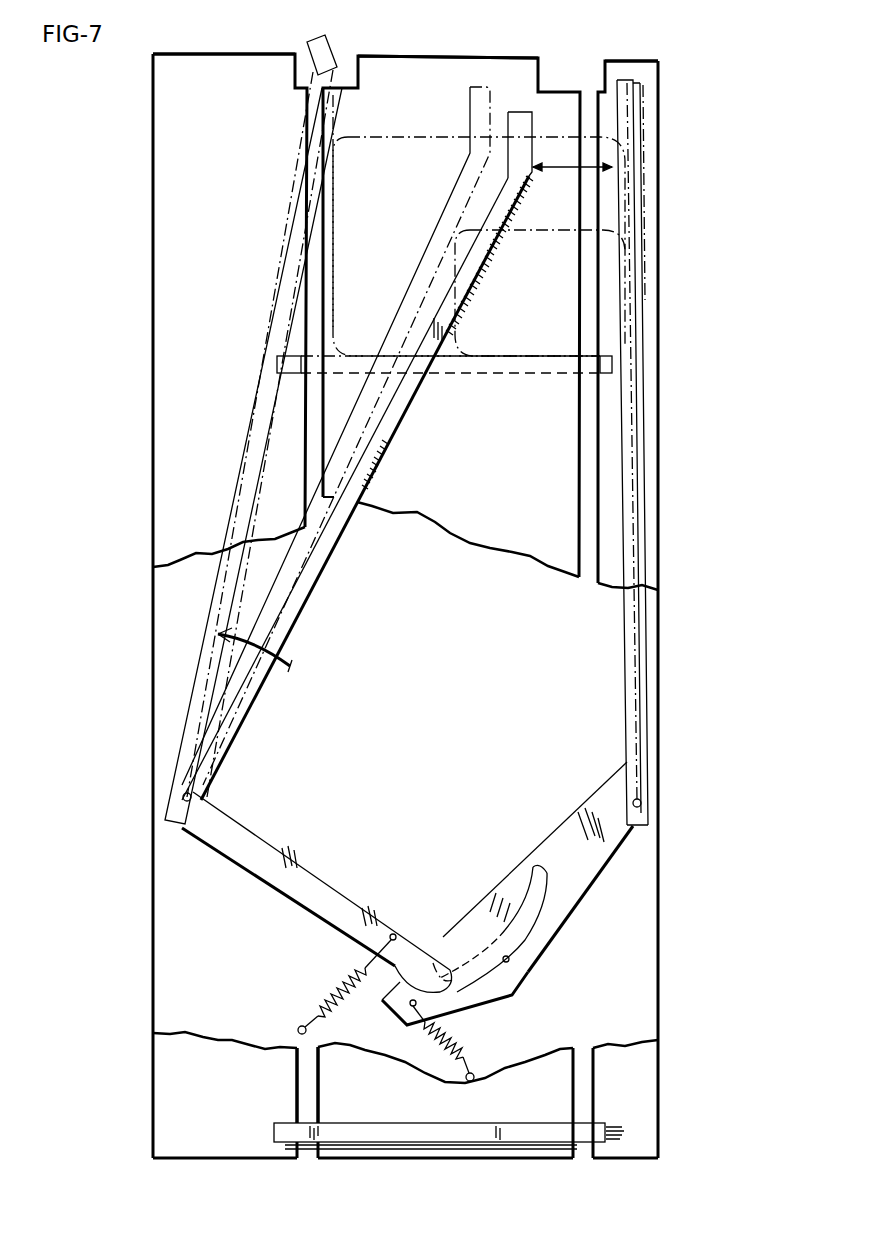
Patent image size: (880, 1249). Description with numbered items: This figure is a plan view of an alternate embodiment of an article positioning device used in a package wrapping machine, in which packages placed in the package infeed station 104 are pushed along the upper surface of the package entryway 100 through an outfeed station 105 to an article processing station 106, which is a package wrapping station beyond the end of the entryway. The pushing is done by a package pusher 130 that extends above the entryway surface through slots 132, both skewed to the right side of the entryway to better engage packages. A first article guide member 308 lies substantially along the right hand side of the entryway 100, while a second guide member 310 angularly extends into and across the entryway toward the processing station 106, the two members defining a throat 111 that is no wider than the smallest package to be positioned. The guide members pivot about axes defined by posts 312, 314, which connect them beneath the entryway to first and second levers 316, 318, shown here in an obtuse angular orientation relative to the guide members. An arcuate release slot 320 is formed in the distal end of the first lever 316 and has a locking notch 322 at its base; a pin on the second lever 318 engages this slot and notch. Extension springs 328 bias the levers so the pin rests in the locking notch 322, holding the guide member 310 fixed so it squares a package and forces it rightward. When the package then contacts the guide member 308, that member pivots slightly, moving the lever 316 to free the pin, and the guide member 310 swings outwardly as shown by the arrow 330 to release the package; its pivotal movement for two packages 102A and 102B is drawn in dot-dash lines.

The package entryway 100 is at (683, 236).
The package 102A is at (563, 232).
The package 102B is at (333, 228).
The package infeed station 104 is at (297, 990).
The outfeed station 105 is at (410, 205).
The article processing station 106 is at (428, 31).
The throat 111 is at (570, 165).
The package pusher 130 is at (373, 1148).
The slots 132 is at (312, 1068).
The first article guide member 308 is at (645, 293).
The second guide member 310 is at (345, 450).
The post 312 is at (650, 806).
The post 314 is at (180, 796).
The first lever 316 is at (570, 870).
The second lever 318 is at (320, 883).
The arcuate release slot 320 is at (515, 970).
The locking notch 322 is at (445, 962).
The extension springs 328 is at (412, 1060).
The arrow 330 is at (293, 670).